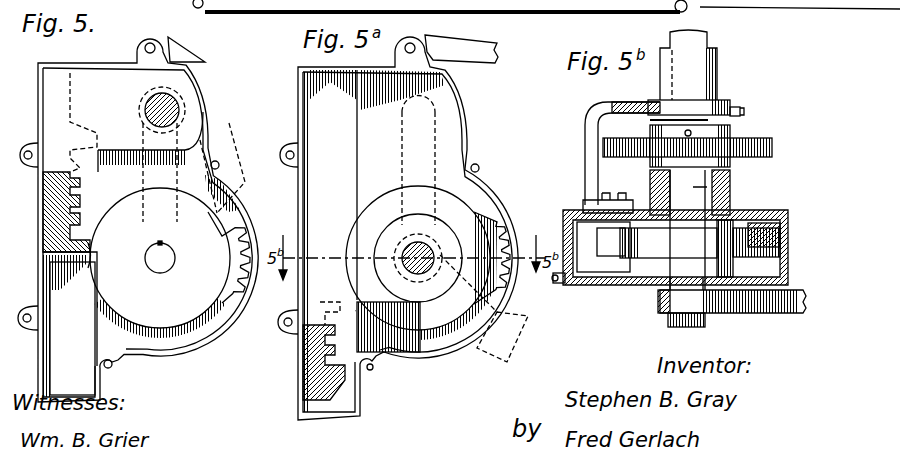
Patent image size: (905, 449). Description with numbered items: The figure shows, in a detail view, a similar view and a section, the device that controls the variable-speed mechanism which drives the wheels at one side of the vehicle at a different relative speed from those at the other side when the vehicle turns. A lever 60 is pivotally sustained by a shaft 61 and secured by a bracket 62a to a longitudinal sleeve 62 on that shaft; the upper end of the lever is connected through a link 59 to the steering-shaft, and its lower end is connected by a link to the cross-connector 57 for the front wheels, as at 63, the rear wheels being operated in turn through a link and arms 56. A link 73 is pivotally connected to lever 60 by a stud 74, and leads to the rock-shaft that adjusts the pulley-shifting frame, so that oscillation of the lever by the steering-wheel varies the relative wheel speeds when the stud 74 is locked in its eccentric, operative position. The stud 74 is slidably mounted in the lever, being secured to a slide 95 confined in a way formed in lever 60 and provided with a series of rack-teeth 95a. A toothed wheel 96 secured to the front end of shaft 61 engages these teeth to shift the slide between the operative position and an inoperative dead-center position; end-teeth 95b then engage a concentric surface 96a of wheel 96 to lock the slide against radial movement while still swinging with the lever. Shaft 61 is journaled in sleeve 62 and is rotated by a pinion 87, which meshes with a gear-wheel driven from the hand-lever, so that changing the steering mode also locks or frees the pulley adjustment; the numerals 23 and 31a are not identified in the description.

In FIG. 5A, the bar 23 is at (455, 0).
In FIG. 5, the link 31a is at (560, 23).
In FIG. 5, the arms 56 is at (149, 8).
In FIG. 5A, the cross-connector 57 is at (523, 0).
In FIG. 5, the link 59 is at (185, 39).
In FIG. 5A, the link 59 is at (461, 49).
In FIG. 5, the lever 60 is at (209, 109).
In FIG. 5A, the lever 60 is at (470, 92).
In FIG. 5B, the lever 60 is at (568, 287).
In FIG. 5, the shaft 61 is at (162, 268).
In FIG. 5B, the shaft 61 is at (732, 187).
In FIG. 5, the longitudinal sleeve 62 is at (262, 3).
In FIG. 5B, the longitudinal sleeve 62 is at (718, 68).
In FIG. 5B, the bracket 62a is at (590, 172).
In FIG. 5B, the connection of link to cross-connector 63 is at (697, 7).
In FIG. 5, the link 73 is at (228, 133).
In FIG. 5A, the link 73 is at (493, 308).
In FIG. 5B, the link 73 is at (770, 305).
In FIG. 5, the stud 74 is at (167, 103).
In FIG. 5A, the stud 74 is at (418, 276).
In FIG. 5B, the stud 74 is at (687, 323).
In FIG. 5B, the pinion 87 is at (758, 143).
In FIG. 5, the slide 95 is at (106, 90).
In FIG. 5A, the slide 95 is at (310, 282).
In FIG. 5B, the slide 95 is at (612, 268).
In FIG. 5, the rack-teeth 95a is at (70, 201).
In FIG. 5A, the rack-teeth 95a is at (320, 358).
In FIG. 5, the end-teeth 95b is at (90, 244).
In FIG. 5A, the end-teeth 95b is at (337, 213).
In FIG. 5, the toothed wheel 96 is at (233, 217).
In FIG. 5A, the toothed wheel 96 is at (473, 220).
In FIG. 5B, the toothed wheel 96 is at (777, 212).
In FIG. 5, the concentric surface 96a is at (90, 258).
In FIG. 5A, the concentric surface 96a is at (378, 198).
In FIG. 5B, the concentric surface 96a is at (660, 248).